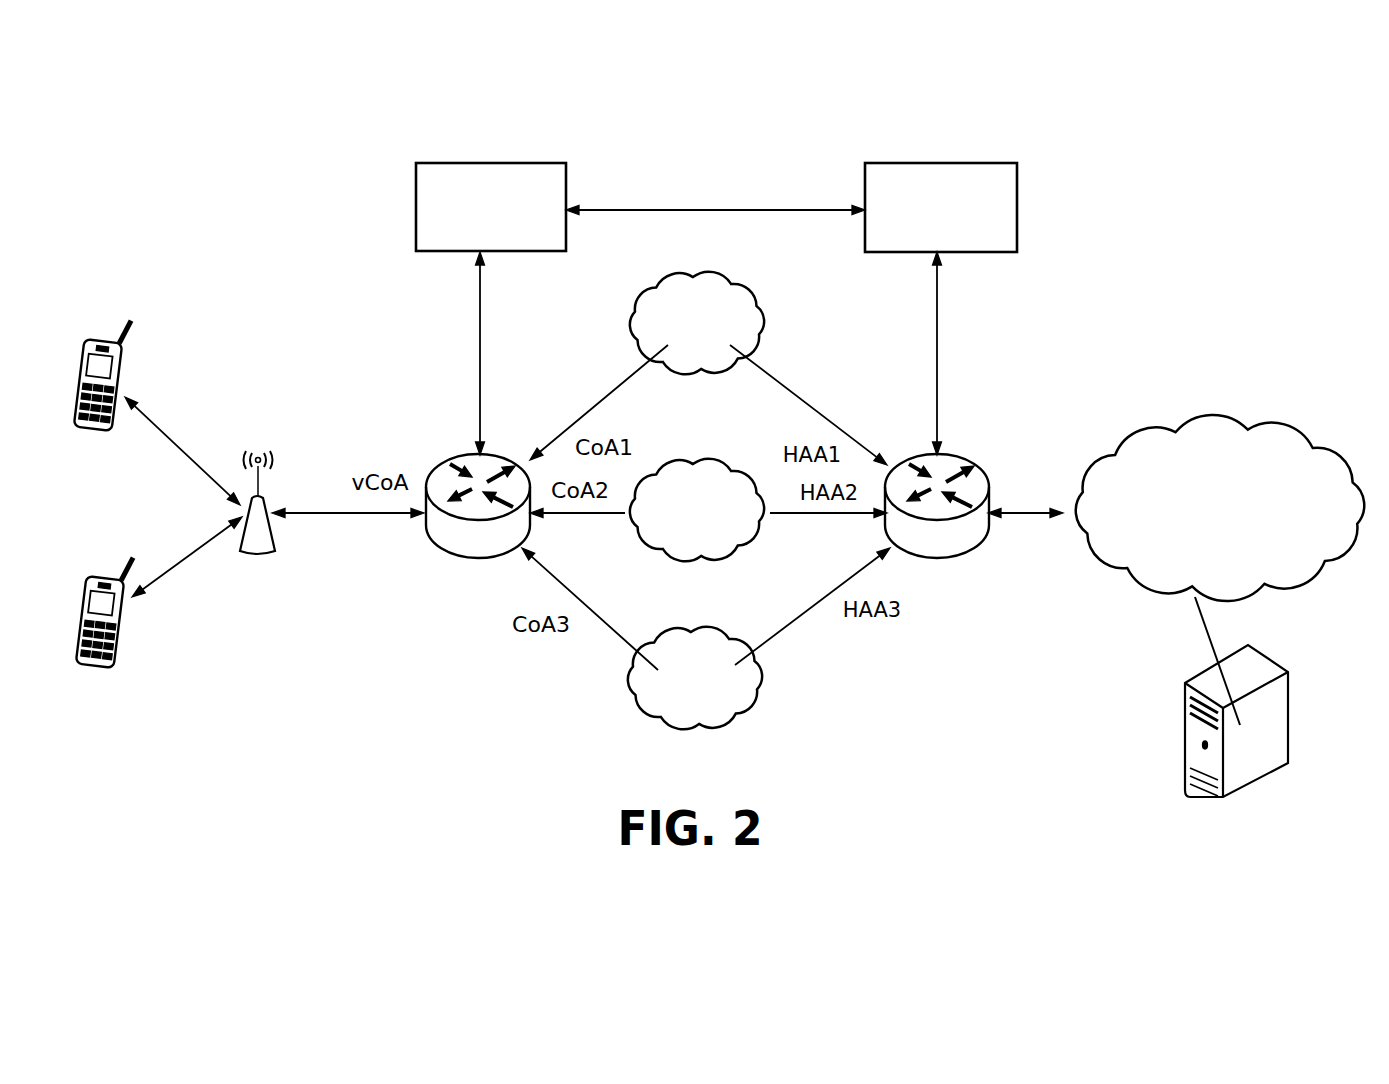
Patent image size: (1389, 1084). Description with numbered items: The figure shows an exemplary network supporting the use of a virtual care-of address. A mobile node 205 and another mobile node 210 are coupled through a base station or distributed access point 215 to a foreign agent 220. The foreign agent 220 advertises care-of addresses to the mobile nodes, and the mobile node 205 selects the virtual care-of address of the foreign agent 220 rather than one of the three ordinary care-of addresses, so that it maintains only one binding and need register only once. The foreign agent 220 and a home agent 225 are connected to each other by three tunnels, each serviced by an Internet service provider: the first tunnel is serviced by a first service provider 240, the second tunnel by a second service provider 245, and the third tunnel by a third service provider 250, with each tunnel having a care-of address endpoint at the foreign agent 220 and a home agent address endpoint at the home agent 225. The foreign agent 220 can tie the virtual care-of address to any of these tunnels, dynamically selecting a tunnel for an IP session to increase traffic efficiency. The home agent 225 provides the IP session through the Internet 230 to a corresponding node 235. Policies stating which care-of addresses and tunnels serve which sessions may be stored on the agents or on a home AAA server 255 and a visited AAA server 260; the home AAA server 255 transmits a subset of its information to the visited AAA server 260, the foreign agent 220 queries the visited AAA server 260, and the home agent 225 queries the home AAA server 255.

The mobile node 205 is at (95, 342).
The mobile node 210 is at (96, 578).
The access point 215 is at (274, 530).
The foreign agent 220 is at (500, 455).
The home agent 225 is at (958, 455).
The Internet 230 is at (1250, 418).
The corresponding node 235 is at (1282, 660).
The ISP1 240 is at (766, 301).
The ISP2 245 is at (707, 462).
The ISP3 250 is at (742, 628).
The H-AAA server 255 is at (1018, 177).
The V-AAA server 260 is at (568, 177).